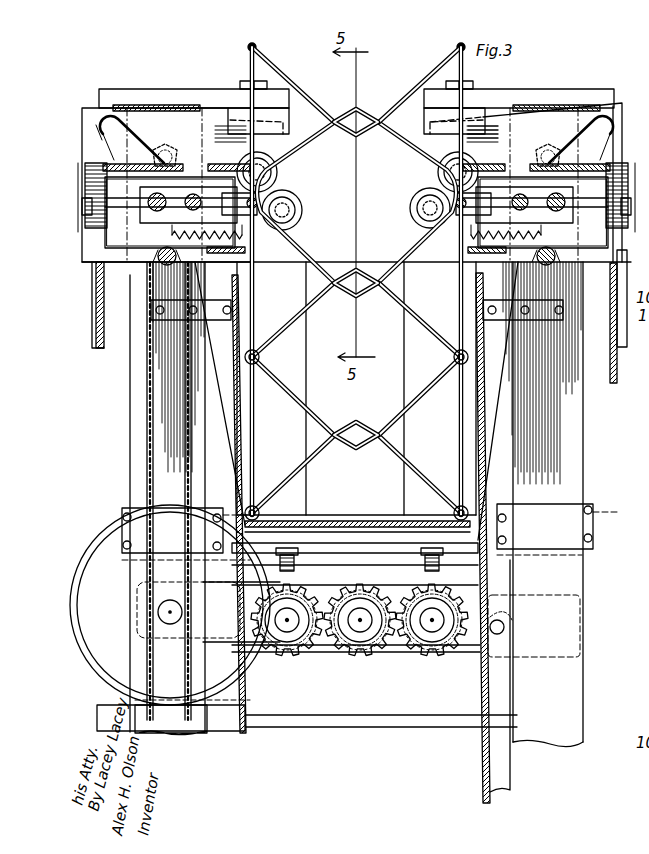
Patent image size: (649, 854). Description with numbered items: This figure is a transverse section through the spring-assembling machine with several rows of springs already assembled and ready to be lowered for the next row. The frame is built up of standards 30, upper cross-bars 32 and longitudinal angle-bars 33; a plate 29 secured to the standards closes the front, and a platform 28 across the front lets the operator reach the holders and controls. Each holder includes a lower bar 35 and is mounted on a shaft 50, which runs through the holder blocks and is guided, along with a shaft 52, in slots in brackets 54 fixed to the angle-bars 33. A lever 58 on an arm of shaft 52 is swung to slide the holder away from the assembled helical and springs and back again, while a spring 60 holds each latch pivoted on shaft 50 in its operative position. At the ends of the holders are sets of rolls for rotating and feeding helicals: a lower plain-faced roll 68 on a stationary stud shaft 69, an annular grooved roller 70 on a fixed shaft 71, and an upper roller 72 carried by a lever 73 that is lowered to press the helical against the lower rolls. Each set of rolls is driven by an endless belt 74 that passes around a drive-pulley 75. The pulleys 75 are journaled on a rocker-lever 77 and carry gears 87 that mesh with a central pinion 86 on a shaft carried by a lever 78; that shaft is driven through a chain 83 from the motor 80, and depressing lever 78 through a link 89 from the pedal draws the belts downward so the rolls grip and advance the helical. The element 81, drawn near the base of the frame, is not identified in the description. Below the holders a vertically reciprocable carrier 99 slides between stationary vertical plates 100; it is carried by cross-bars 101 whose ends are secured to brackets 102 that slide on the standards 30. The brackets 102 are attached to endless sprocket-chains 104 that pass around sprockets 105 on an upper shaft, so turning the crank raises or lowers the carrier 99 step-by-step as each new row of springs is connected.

The platform 28 is at (237, 262).
The plate 29 is at (618, 372).
The standards 30 is at (584, 435).
The upper cross-bars 32 is at (355, 367).
The longitudinal angle-bars 33 is at (140, 147).
The lower bar 35 is at (440, 222).
The shaft 50 is at (160, 206).
The shaft 52 is at (356, 234).
The brackets 54 is at (123, 258).
The lever 58 is at (110, 118).
The spring 60 is at (243, 242).
The lower plain-faced roll 68 is at (262, 203).
The stud shaft 69 is at (284, 213).
The annular grooved roller 70 is at (223, 170).
The fixed shaft 71 is at (216, 258).
The upper roller 72 is at (270, 172).
The lever 73 is at (180, 118).
The endless belt 74 is at (405, 332).
The drive-pulley 75 is at (305, 657).
The rocker-lever 77 is at (393, 604).
The lever 78 is at (470, 656).
The motor 80 is at (175, 605).
The base plate 81 is at (220, 733).
The chain 83 is at (248, 667).
The central pinion 86 is at (352, 656).
The gears 87 is at (312, 672).
The link 89 is at (510, 775).
The carrier 99 is at (353, 521).
The vertical plates 100 is at (240, 405).
The cross-bars 101 is at (348, 541).
The brackets 102 is at (125, 512).
The endless sprocket-chains 104 is at (147, 458).
The sprockets 105 is at (142, 290).